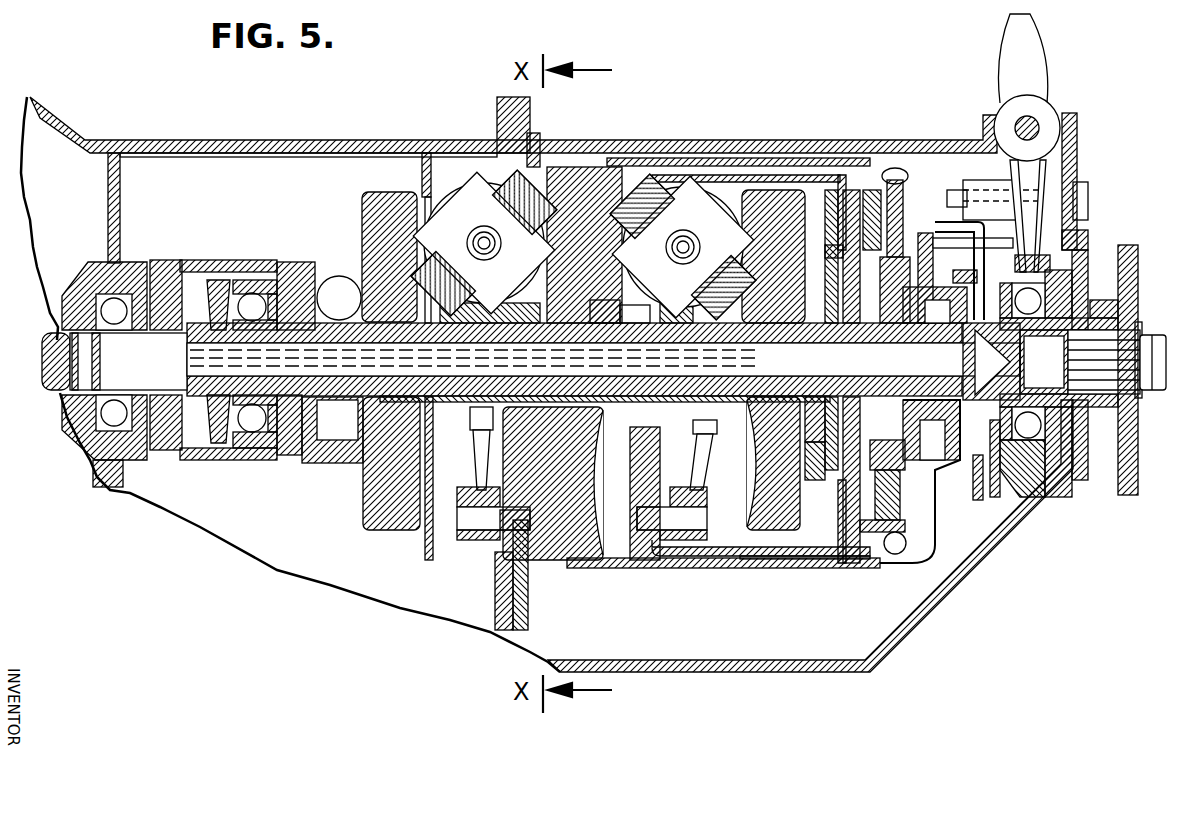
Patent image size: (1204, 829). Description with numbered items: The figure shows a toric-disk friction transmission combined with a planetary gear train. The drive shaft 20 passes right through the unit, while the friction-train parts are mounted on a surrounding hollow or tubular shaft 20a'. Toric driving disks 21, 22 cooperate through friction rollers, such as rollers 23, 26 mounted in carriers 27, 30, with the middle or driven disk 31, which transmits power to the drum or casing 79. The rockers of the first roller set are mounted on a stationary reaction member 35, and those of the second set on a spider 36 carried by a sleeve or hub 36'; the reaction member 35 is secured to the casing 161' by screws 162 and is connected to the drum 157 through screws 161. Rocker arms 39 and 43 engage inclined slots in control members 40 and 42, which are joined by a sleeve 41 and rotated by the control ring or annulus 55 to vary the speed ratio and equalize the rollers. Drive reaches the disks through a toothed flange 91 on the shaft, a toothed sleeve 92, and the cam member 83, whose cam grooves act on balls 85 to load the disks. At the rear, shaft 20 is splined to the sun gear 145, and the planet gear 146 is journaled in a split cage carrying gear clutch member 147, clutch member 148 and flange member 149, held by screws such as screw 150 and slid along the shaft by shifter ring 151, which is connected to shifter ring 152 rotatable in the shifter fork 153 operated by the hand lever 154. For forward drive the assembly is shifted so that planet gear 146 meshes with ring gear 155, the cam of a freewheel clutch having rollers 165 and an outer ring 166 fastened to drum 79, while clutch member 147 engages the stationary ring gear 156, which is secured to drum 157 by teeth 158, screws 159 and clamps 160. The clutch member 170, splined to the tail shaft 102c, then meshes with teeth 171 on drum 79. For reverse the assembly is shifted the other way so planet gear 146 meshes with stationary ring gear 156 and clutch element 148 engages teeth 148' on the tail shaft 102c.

The drive shaft 20 is at (62, 378).
The hollow or tubular shaft 20a' is at (375, 463).
The toric driving disk 21 is at (383, 205).
The toric driving disk 22 is at (773, 198).
The friction roller 23 is at (512, 249).
The friction roller 26 is at (645, 207).
The roller carrier 27 is at (472, 216).
The roller carrier 30 is at (698, 221).
The middle or driven disk 31 is at (587, 192).
The stationary reaction member 35 is at (522, 570).
The stationary member or spider 36 is at (729, 496).
The sleeve or hub 36' is at (581, 483).
The rocker arm 39 is at (480, 477).
The control and equalizing member 40 is at (470, 420).
The sleeve 41 is at (595, 320).
The control member 42 is at (720, 434).
The rocker arm 43 is at (700, 477).
The control ring or annulus 55 is at (425, 545).
The drum or casing 79 is at (705, 160).
The cam member 83 is at (293, 270).
The ball 85 is at (340, 283).
The toothed flange 91 is at (165, 262).
The toothed sleeve 92 is at (212, 262).
The tail shaft 102c is at (1108, 348).
The sun gear 145 is at (805, 440).
The planet gear or pinion 146 is at (853, 214).
The gear clutch member 147 is at (833, 248).
The clutch member 148 is at (911, 497).
The teeth 148' is at (764, 492).
The flange member 149 is at (920, 492).
The screw 150 is at (895, 545).
The shifter ring 151 is at (928, 233).
The shifter ring 152 is at (1000, 182).
The shifter fork 153 is at (1078, 236).
The hand lever 154 is at (1033, 63).
The ring gear 155 is at (866, 195).
The stationary ring gear 156 is at (845, 503).
The drum 157 is at (770, 560).
The teeth 158 is at (843, 188).
The screw 159 is at (880, 567).
The clamp 160 is at (820, 556).
The screw 161 is at (723, 577).
The casing 161' is at (308, 136).
The screw 162 is at (541, 140).
The roller 165 is at (902, 200).
The outer ring 166 is at (893, 168).
The clutch member 170 is at (977, 500).
The teeth 171 is at (992, 465).